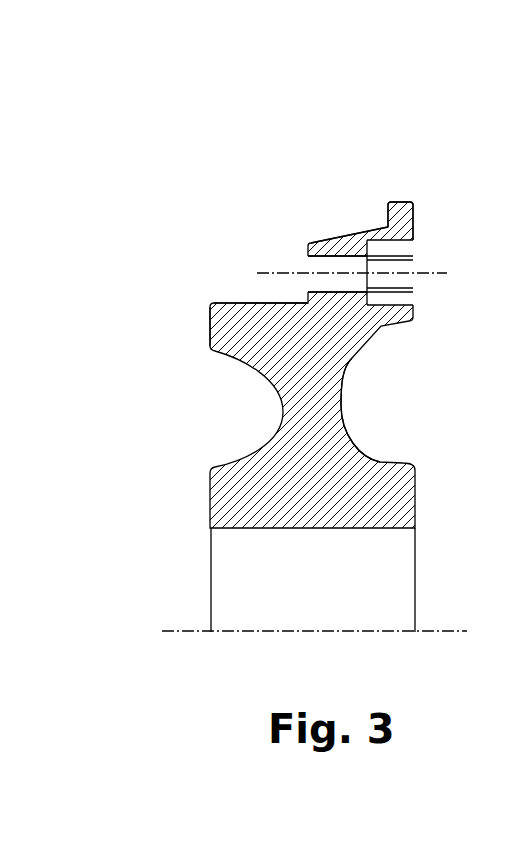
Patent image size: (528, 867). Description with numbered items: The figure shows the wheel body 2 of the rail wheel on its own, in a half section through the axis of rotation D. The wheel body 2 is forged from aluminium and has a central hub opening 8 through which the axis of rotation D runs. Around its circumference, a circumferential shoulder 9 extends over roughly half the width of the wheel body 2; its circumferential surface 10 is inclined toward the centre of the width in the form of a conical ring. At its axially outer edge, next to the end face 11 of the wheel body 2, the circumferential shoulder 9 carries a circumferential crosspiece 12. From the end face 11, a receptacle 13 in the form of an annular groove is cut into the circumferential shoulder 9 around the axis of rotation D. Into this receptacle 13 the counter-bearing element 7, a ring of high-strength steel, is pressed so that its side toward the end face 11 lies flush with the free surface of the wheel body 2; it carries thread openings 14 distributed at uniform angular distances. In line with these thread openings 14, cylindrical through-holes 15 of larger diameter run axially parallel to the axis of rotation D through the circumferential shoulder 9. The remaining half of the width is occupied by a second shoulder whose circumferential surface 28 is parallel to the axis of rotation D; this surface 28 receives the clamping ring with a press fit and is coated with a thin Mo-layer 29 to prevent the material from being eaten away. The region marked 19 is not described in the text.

The wheel body 2 is at (174, 272).
The counter-bearing element 7 is at (390, 255).
The hub opening 8 is at (302, 618).
The circumferential shoulder 9 is at (337, 238).
The circumferential surface 10 is at (349, 230).
The end face 11 is at (440, 433).
The circumferential crosspiece 12 is at (400, 202).
The receptacle 13 is at (386, 308).
The thread openings 14 is at (395, 268).
The through-holes 15 is at (323, 279).
The side face 19 is at (162, 335).
The circumferential surface 28 is at (274, 300).
The Mo-layer 29 is at (220, 303).